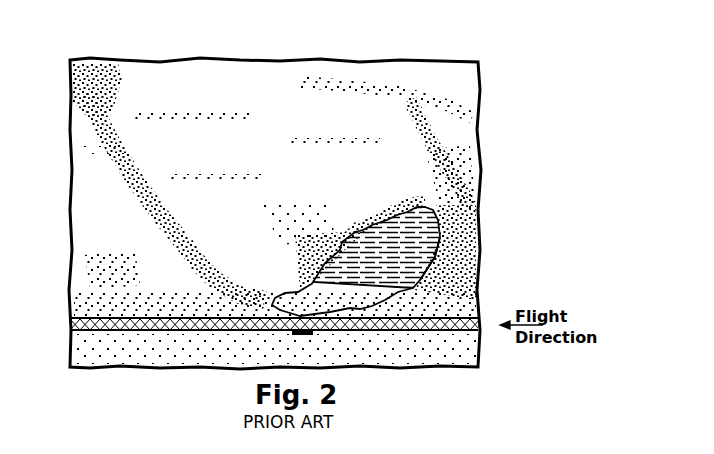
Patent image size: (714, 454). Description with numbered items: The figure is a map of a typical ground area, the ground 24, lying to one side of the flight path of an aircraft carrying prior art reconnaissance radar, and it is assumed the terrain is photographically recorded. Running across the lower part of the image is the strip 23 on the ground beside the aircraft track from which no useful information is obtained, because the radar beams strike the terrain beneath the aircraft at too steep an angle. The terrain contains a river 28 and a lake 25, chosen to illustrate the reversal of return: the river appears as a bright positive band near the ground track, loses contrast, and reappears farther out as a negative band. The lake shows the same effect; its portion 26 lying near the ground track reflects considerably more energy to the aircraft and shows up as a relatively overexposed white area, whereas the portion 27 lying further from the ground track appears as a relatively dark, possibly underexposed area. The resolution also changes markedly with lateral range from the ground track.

The strip 23 is at (70, 320).
The ground 24 is at (314, 60).
The lake 25 is at (433, 213).
The portion of the lake near the ground track 26 is at (403, 290).
The portion of the lake lying further from the ground track 27 is at (440, 237).
The river 28 is at (200, 258).